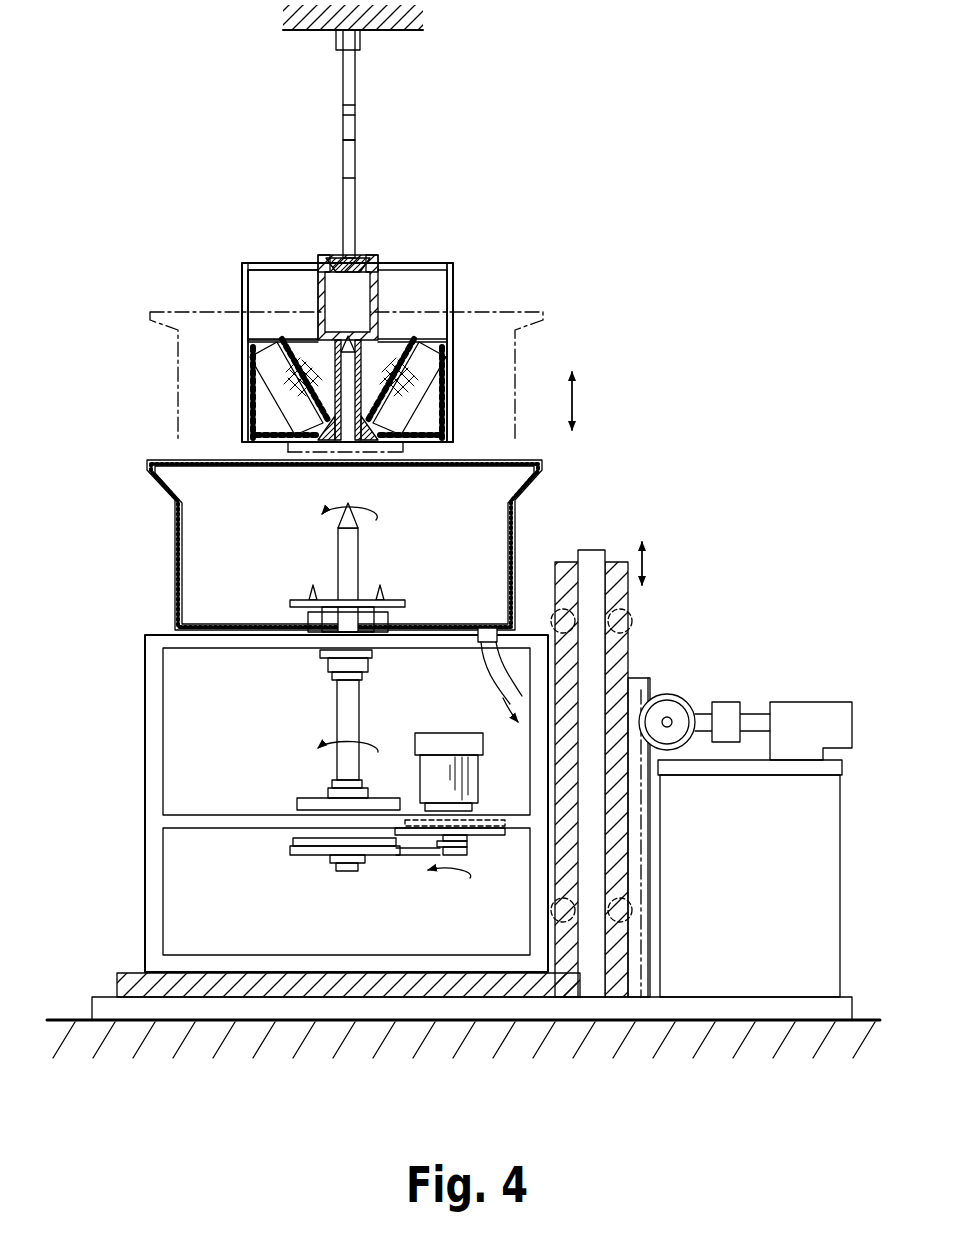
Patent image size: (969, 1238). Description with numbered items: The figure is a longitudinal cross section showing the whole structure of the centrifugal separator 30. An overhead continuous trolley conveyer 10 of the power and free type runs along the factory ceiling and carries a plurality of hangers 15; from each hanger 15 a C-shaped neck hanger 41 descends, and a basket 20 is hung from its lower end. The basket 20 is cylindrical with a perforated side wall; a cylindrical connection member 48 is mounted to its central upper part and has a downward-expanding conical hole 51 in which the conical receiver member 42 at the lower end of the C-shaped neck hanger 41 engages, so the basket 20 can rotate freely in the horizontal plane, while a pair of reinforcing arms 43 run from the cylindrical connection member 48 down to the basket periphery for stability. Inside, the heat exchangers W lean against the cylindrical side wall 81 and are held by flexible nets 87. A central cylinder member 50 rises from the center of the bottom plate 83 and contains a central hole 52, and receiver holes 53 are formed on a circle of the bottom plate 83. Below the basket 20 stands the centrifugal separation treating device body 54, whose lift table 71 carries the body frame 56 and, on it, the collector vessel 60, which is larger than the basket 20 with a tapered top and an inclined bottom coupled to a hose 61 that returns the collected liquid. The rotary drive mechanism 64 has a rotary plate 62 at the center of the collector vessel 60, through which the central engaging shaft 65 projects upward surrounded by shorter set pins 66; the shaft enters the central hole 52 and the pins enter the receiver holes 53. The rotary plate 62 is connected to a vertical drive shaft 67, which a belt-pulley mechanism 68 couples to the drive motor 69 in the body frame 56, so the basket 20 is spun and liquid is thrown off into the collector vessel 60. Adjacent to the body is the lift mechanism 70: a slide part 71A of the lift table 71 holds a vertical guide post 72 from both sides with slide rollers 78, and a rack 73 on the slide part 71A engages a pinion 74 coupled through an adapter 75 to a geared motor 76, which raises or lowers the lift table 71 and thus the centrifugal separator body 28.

The continuous trolley conveyer 10 is at (310, 98).
The hanger 15 is at (355, 145).
The C-shaped neck hanger 41 is at (355, 207).
The centrifugal separator 30 is at (582, 190).
The basket 20 is at (264, 330).
The reinforcing arms 43 is at (237, 262).
The conical receiver member 42 is at (392, 262).
The conical hole 51 is at (318, 268).
The cylindrical connection member 48 is at (318, 262).
The central cylinder member 50 is at (455, 265).
The flexible nets 87 is at (246, 330).
The central hole 52 is at (368, 445).
The heat exchangers W is at (240, 375).
The cylindrical side wall 81 is at (242, 408).
The bottom plate 83 is at (438, 445).
The receiver holes 53 is at (302, 447).
The collector vessel 60 is at (176, 562).
The central engaging shaft 65 is at (360, 566).
The set pins 66 is at (310, 594).
The rotary plate 62 is at (290, 602).
The body frame 56 is at (146, 733).
The centrifugal separator body 28 is at (140, 615).
The centrifugal separation treating device body 54 is at (122, 805).
The rotary drive mechanism 64 is at (316, 678).
The drive shaft 67 is at (335, 716).
The drive motor 69 is at (418, 777).
The hose 61 is at (480, 673).
The belt-pulley mechanism 68 is at (418, 860).
The slide part 71A is at (630, 650).
The guide post 72 is at (593, 1000).
The slide rollers 78 is at (632, 616).
The rack 73 is at (642, 945).
The lift mechanism 70 is at (752, 618).
The pinion 74 is at (690, 748).
The adapter 75 is at (742, 742).
The geared motor 76 is at (793, 702).
The lift table 71 is at (315, 998).